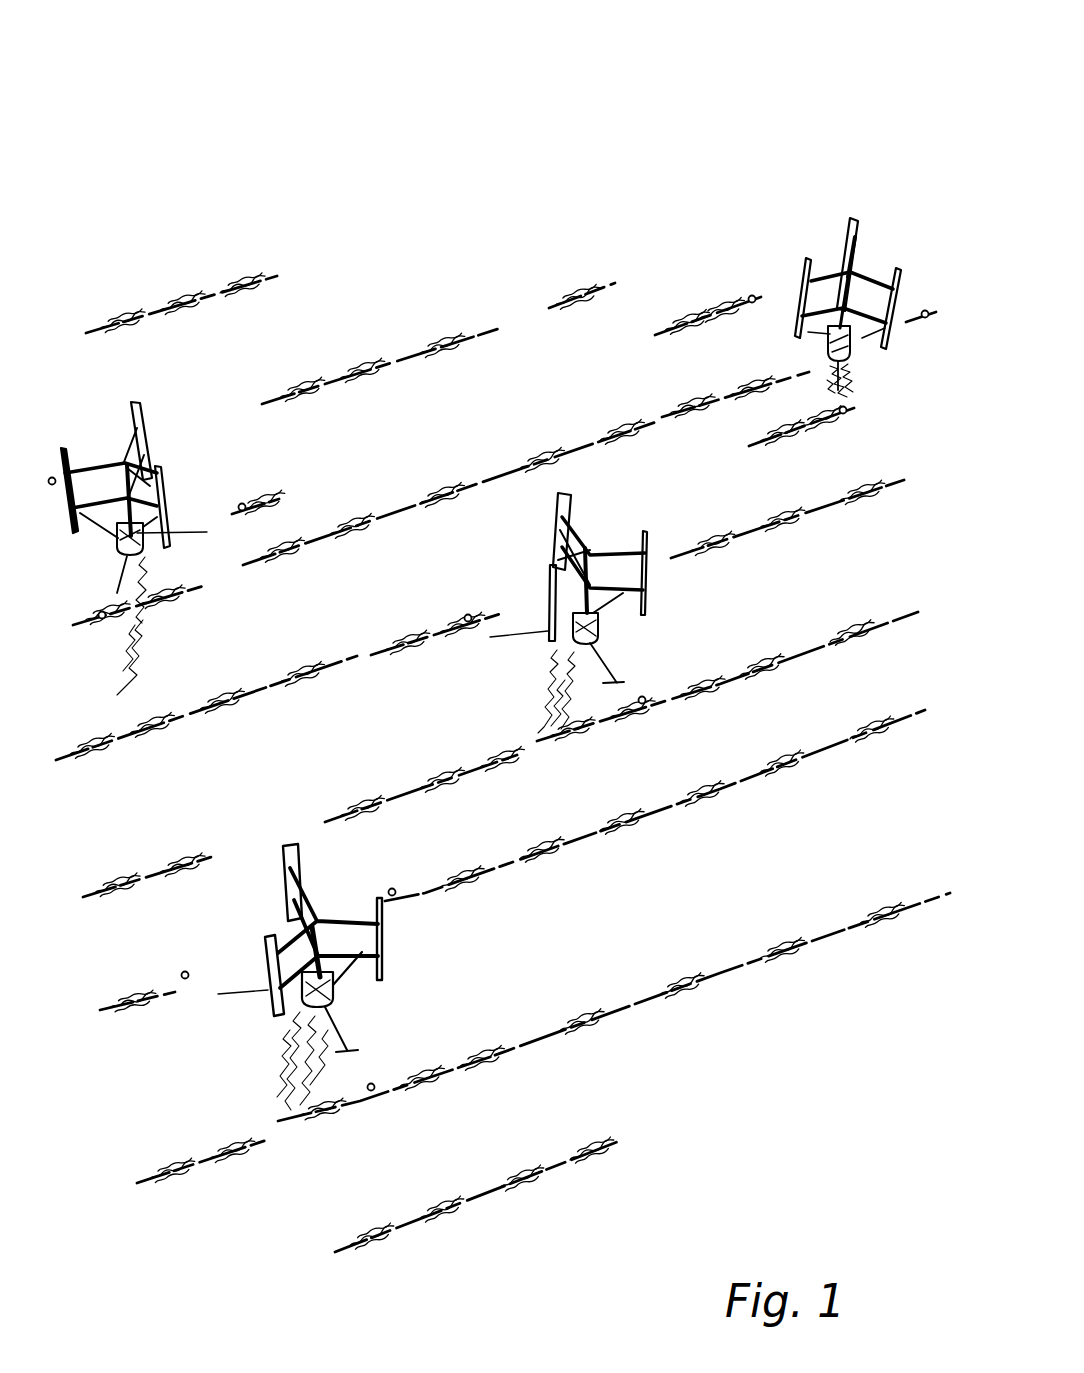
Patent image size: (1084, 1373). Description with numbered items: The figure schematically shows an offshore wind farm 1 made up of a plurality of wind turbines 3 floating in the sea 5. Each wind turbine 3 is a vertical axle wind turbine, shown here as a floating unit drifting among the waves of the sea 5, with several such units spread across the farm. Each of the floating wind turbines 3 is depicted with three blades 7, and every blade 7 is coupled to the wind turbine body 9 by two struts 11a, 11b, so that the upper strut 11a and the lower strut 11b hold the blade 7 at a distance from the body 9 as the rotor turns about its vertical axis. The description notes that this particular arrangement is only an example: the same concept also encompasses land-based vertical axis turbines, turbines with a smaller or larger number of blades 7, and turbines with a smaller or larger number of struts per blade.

The offshore wind farm 1 is at (845, 108).
The wind turbine 3 is at (904, 252).
The sea 5 is at (463, 421).
The blade 7 is at (893, 298).
The wind turbine body 9 is at (842, 298).
The strut 11a is at (875, 268).
The strut 11b is at (862, 322).